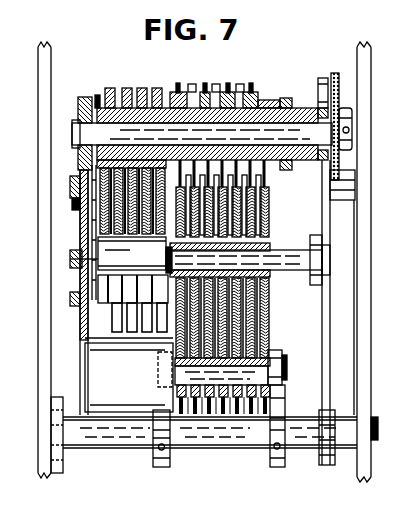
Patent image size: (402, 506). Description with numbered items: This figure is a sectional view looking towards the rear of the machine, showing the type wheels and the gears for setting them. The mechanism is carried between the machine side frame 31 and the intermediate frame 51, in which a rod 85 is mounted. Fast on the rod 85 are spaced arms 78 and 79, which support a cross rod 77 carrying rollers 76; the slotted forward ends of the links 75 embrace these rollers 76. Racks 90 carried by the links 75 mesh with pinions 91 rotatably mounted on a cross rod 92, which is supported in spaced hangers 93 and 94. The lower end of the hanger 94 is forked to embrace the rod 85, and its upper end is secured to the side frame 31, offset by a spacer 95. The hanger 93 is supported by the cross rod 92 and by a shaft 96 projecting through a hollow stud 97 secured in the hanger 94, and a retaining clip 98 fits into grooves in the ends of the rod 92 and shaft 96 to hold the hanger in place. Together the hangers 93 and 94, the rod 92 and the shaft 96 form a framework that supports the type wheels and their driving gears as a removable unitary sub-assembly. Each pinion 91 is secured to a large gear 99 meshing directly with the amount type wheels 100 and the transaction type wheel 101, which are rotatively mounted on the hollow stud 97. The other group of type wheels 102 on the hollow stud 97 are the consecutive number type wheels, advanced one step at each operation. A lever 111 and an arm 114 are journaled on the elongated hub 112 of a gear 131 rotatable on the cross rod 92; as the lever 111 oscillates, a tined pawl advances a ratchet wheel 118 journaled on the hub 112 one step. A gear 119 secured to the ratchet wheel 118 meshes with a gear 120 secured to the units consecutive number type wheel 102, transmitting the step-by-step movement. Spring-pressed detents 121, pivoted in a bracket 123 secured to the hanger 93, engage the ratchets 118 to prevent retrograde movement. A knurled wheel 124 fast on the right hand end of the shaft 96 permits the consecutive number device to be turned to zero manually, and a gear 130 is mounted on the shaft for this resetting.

The machine side frame 31 is at (371, 368).
The intermediate frame 51 is at (50, 327).
The links 75 is at (236, 406).
The rollers 76 is at (270, 352).
The cross rod 77 is at (276, 364).
The arm 78 is at (154, 448).
The arm 79 is at (277, 468).
The rod 85 is at (238, 436).
The racks 90 is at (268, 316).
The pinions 91 is at (258, 220).
The cross rod 92 is at (284, 254).
The hanger 93 is at (86, 311).
The hanger 94 is at (326, 302).
The spacer 95 is at (348, 200).
The shaft 96 is at (312, 135).
The hollow stud 97 is at (287, 98).
The retaining clip 98 is at (80, 218).
The large gear 99 is at (262, 204).
The amount type wheels 100 is at (226, 84).
The transaction type wheel 101 is at (186, 92).
The consecutive number type wheels 102 is at (142, 88).
The lever 111 is at (96, 229).
The elongated hub 112 is at (167, 260).
The arm 114 is at (132, 253).
The ratchet wheel 118 is at (110, 202).
The gear 119 is at (100, 186).
The gear 120 is at (112, 88).
The detents 121 is at (159, 330).
The bracket 123 is at (106, 378).
The knurled wheel 124 is at (336, 76).
The gear 130 is at (88, 92).
The gear 131 is at (82, 258).